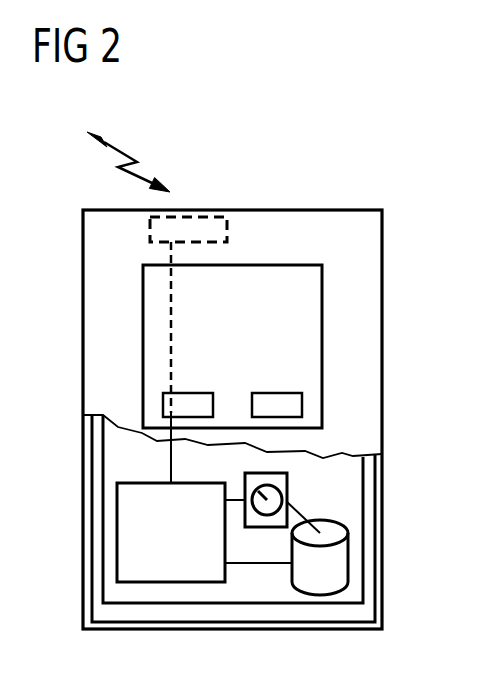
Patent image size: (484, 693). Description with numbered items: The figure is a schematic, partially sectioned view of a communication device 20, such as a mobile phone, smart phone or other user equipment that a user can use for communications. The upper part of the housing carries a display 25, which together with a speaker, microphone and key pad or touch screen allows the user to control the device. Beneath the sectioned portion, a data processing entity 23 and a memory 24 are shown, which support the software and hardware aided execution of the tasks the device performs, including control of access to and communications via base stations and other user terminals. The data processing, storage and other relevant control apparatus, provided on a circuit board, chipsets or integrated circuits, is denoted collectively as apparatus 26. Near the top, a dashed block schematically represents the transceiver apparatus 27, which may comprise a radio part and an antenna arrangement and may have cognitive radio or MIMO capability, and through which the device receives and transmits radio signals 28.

The communication device 20 is at (295, 210).
The data processing entity 23 is at (117, 532).
The memory 24 is at (348, 560).
The display 25 is at (143, 321).
The control apparatus 26 is at (117, 588).
The transceiver apparatus 27 is at (228, 232).
The signals 28 is at (127, 151).